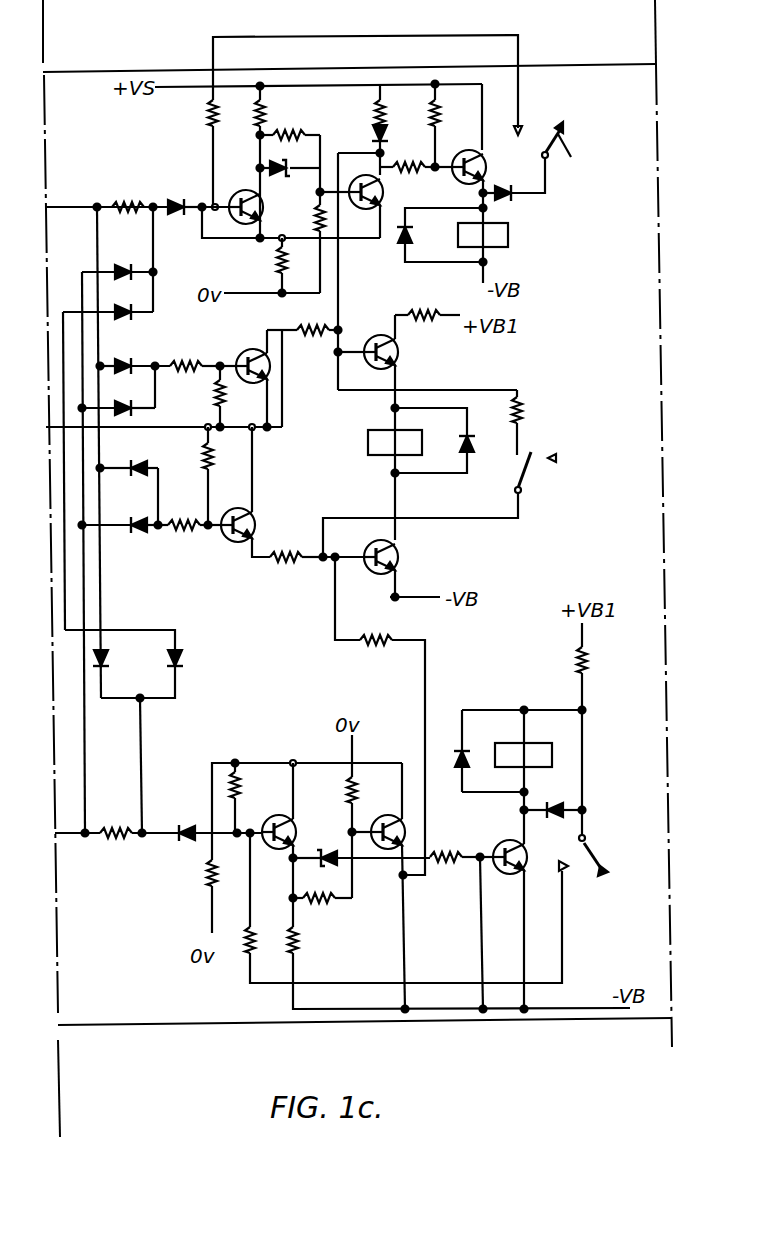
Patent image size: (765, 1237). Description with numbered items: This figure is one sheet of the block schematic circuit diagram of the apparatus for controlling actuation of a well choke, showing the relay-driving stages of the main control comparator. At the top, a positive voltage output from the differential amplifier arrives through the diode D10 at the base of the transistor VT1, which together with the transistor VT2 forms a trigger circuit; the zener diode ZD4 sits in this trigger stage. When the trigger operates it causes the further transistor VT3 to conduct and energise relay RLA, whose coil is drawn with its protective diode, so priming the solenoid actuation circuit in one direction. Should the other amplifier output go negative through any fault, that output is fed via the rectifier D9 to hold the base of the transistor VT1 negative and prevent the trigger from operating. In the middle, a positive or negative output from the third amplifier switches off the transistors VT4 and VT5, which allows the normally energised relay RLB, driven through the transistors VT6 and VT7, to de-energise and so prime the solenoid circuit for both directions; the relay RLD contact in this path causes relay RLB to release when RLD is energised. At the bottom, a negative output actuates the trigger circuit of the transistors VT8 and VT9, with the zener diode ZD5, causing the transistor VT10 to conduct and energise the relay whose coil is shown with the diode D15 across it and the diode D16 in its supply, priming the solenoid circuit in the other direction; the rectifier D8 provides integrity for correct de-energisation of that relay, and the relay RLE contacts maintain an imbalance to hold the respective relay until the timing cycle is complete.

The transistor VT1 is at (232, 196).
The transistor VT2 is at (368, 210).
The transistor VT3 is at (482, 162).
The transistor VT4 is at (247, 349).
The transistor VT5 is at (257, 518).
The transistor VT6 is at (398, 352).
The transistor VT7 is at (398, 555).
The transistor VT8 is at (272, 815).
The transistor VT9 is at (387, 815).
The transistor VT10 is at (504, 840).
The zener diode ZD4 is at (272, 165).
The zener diode ZD5 is at (330, 868).
The rectifier D8 is at (112, 658).
The rectifier D9 is at (128, 265).
The diode D10 is at (168, 203).
The diode D15 is at (453, 747).
The diode D16 is at (568, 806).